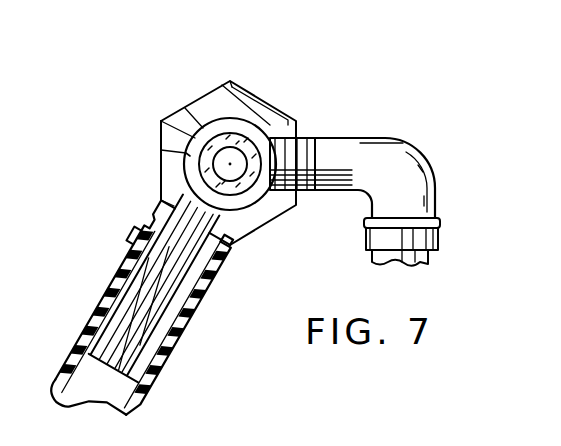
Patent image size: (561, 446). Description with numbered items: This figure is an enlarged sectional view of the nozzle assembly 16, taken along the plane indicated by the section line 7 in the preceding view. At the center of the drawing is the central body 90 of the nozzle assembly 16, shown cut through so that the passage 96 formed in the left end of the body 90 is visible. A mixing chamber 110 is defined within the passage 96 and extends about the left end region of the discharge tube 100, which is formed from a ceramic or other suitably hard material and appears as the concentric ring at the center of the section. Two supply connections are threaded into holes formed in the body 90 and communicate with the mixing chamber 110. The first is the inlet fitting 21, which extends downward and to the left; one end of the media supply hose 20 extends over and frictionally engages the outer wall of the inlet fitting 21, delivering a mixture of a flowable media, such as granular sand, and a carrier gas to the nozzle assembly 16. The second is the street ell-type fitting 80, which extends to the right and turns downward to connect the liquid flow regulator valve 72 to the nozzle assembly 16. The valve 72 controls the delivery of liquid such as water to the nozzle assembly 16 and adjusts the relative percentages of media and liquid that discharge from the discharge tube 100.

The section line 7- 7 is at (32, 0).
The nozzle assembly 16 is at (262, 70).
The media supply hose 20 is at (71, 392).
The inlet fitting 21 is at (148, 227).
The liquid flow regulator valve 72 is at (430, 258).
The street ell-type fitting 80 is at (378, 148).
The central body 90 is at (196, 97).
The passage 96 is at (190, 156).
The discharge tube 100 is at (240, 128).
The mixing chamber 110 is at (207, 122).